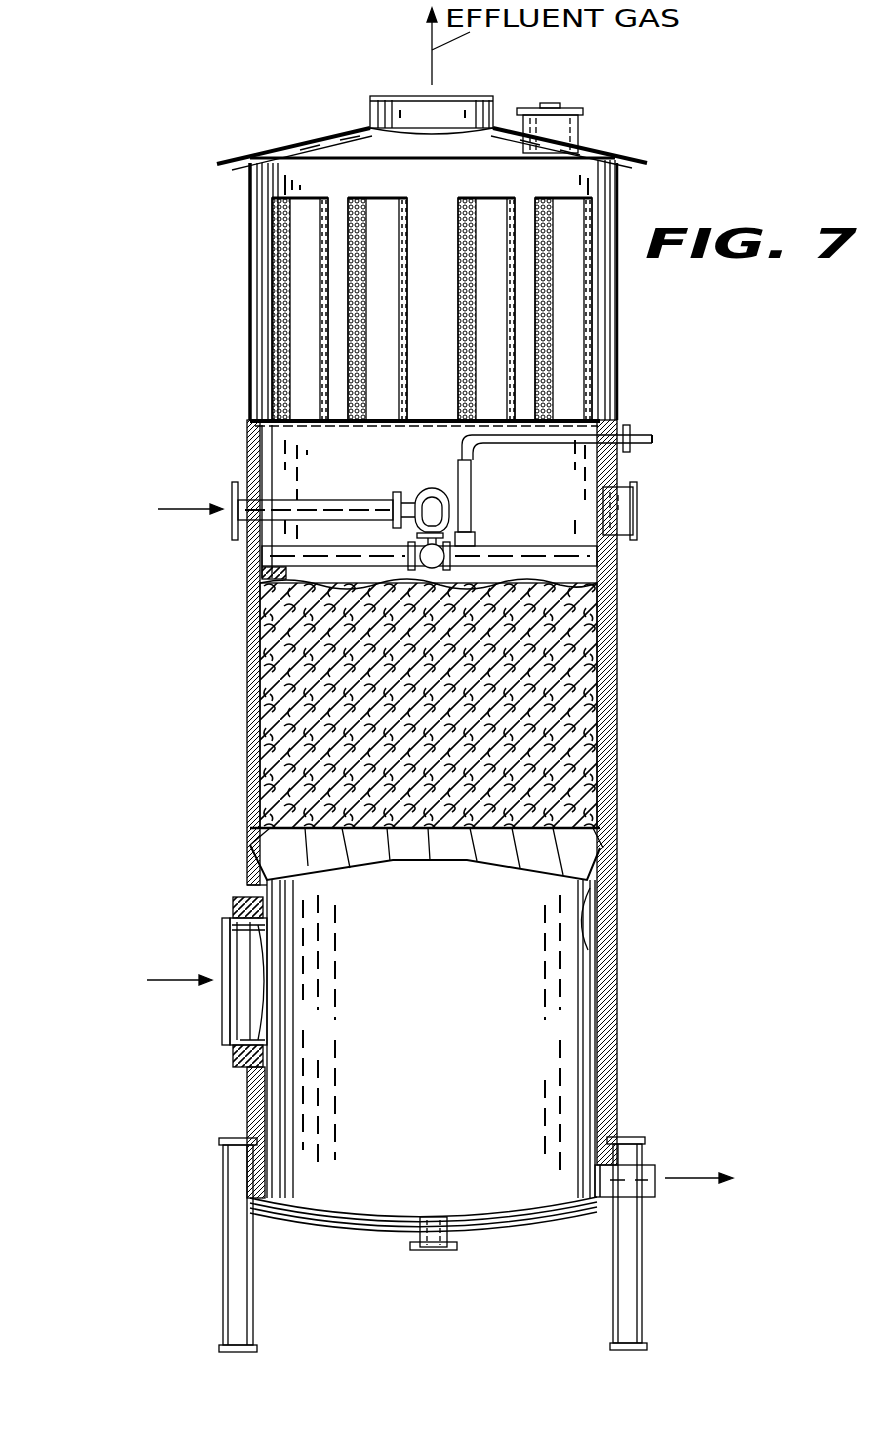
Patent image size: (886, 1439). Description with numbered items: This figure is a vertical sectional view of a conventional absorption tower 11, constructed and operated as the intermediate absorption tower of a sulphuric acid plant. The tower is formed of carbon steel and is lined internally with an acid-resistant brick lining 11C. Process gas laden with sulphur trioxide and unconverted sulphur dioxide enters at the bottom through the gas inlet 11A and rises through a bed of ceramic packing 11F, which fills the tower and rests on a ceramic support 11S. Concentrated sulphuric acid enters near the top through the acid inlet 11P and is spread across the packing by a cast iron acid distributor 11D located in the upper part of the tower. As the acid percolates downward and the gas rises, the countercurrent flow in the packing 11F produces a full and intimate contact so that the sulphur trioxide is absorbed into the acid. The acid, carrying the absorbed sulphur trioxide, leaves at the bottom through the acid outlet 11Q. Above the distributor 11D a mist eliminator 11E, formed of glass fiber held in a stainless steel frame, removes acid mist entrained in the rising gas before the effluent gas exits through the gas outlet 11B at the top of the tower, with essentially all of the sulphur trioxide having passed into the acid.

The intermediate absorption tower 11 is at (643, 365).
The gas inlet 11A is at (222, 952).
The gas outlet 11B is at (473, 97).
The acid-resistant brick lining 11C is at (590, 888).
The acid distributor 11D is at (262, 568).
The mist eliminator 11E is at (570, 230).
The ceramic packing 11F is at (262, 680).
The acid inlet 11P is at (232, 500).
The acid outlet 11Q is at (650, 1165).
The ceramic support 11S is at (315, 843).